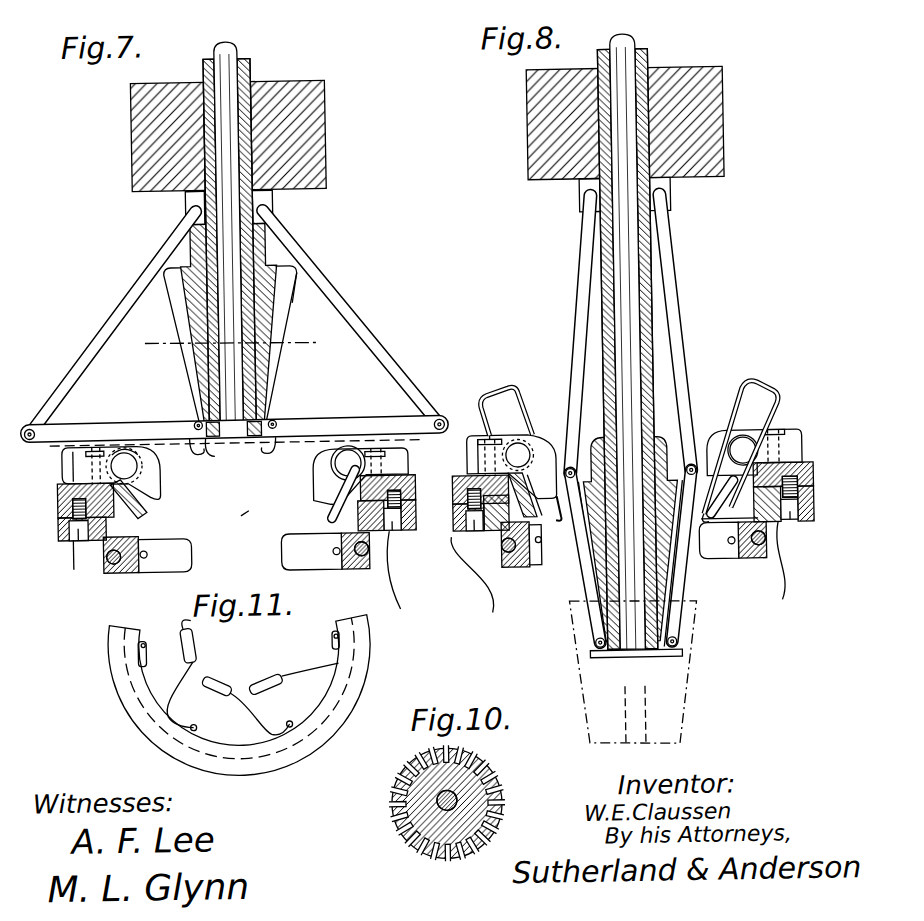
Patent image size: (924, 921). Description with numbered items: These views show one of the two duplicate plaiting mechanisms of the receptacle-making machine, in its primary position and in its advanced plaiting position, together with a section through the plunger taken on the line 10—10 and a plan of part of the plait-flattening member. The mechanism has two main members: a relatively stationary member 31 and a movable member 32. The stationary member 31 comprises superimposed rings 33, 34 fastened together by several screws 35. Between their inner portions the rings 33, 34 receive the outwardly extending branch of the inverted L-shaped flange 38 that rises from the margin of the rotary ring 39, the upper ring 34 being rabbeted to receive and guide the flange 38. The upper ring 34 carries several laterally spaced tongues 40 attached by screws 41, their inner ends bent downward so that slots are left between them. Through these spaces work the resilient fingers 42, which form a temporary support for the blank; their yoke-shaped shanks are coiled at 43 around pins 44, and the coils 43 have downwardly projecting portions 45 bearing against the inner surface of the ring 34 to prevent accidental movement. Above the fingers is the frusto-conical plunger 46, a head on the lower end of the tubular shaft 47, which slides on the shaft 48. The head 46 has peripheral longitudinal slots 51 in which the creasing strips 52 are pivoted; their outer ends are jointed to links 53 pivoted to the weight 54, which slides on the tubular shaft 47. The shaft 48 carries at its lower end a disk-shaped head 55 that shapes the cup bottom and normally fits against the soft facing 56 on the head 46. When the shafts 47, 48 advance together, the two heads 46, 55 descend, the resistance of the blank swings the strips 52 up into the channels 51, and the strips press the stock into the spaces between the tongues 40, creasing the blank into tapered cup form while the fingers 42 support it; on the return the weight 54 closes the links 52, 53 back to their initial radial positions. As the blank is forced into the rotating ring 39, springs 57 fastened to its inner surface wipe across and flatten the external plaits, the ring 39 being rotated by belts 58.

In FIG. 7, the section line 10 is at (230, 342).
In FIG. 7, the stationary member 31 is at (255, 518).
In FIG. 7, the movable member 32 is at (297, 305).
In FIG. 7, the ring 33 is at (60, 534).
In FIG. 8, the ring 33 is at (797, 527).
In FIG. 7, the upper ring 34 is at (415, 505).
In FIG. 8, the upper ring 34 is at (808, 468).
In FIG. 7, the screws 35 is at (240, 582).
In FIG. 8, the screws 35 is at (628, 581).
In FIG. 7, the inverted L-shaped flange 38 is at (120, 526).
In FIG. 8, the inverted L-shaped flange 38 is at (498, 530).
In FIG. 7, the rotary ring 39 is at (112, 567).
In FIG. 8, the rotary ring 39 is at (512, 568).
In FIG. 7, the tongues 40 is at (147, 468).
In FIG. 8, the tongues 40 is at (546, 436).
In FIG. 7, the screws 41 is at (96, 451).
In FIG. 8, the screws 41 is at (484, 440).
In FIG. 7, the resilient fingers 42 is at (194, 452).
In FIG. 8, the resilient fingers 42 is at (556, 560).
In FIG. 7, the coils 43 is at (127, 448).
In FIG. 8, the coils 43 is at (510, 432).
In FIG. 7, the pins 44 is at (125, 460).
In FIG. 8, the pins 44 is at (522, 444).
In FIG. 7, the downwardly projecting portions 45 is at (143, 502).
In FIG. 8, the downwardly projecting portions 45 is at (506, 487).
In FIG. 11, the downwardly projecting portions 45 is at (253, 677).
In FIG. 7, the plunger 46 is at (260, 300).
In FIG. 8, the plunger 46 is at (653, 598).
In FIG. 10, the plunger 46 is at (419, 795).
In FIG. 7, the tubular shaft 47 is at (255, 66).
In FIG. 8, the tubular shaft 47 is at (648, 60).
In FIG. 7, the shaft 48 is at (231, 133).
In FIG. 8, the shaft 48 is at (629, 117).
In FIG. 10, the shaft 48 is at (434, 847).
In FIG. 7, the slots 51 is at (280, 381).
In FIG. 8, the slots 51 is at (677, 600).
In FIG. 10, the slots 51 is at (389, 815).
In FIG. 7, the plaiting members 52 is at (331, 415).
In FIG. 8, the plaiting members 52 is at (675, 628).
In FIG. 7, the links 53 is at (379, 341).
In FIG. 8, the links 53 is at (670, 298).
In FIG. 8, the weight 54 is at (552, 135).
In FIG. 7, the head 55 is at (212, 437).
In FIG. 8, the head 55 is at (649, 659).
In FIG. 7, the soft facing 56 is at (248, 437).
In FIG. 8, the soft facing 56 is at (614, 655).
In FIG. 7, the springs 57 is at (282, 557).
In FIG. 8, the springs 57 is at (568, 552).
In FIG. 11, the springs 57 is at (275, 672).
In FIG. 7, the belts 58 is at (368, 553).
In FIG. 8, the belts 58 is at (753, 565).